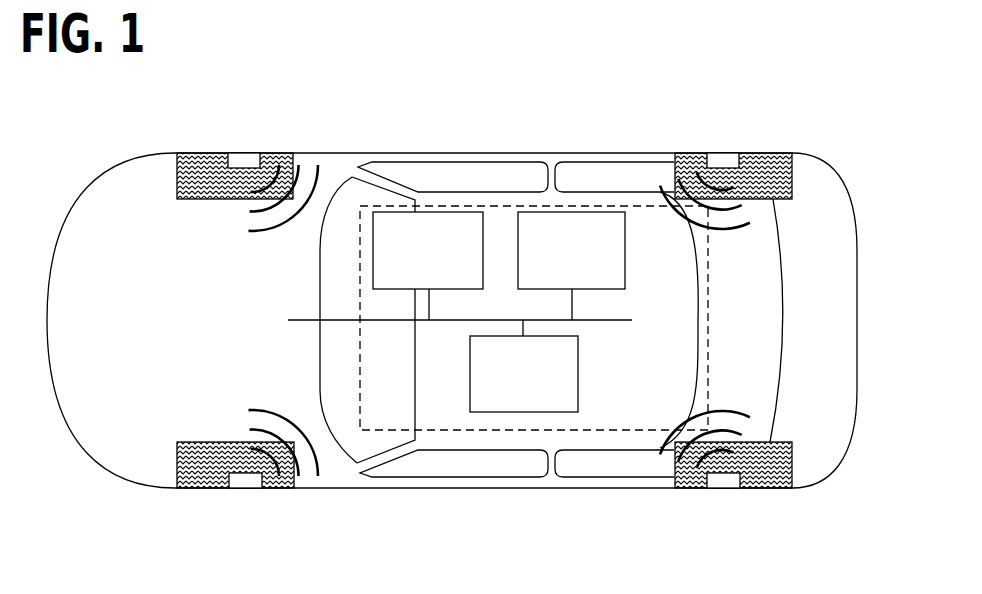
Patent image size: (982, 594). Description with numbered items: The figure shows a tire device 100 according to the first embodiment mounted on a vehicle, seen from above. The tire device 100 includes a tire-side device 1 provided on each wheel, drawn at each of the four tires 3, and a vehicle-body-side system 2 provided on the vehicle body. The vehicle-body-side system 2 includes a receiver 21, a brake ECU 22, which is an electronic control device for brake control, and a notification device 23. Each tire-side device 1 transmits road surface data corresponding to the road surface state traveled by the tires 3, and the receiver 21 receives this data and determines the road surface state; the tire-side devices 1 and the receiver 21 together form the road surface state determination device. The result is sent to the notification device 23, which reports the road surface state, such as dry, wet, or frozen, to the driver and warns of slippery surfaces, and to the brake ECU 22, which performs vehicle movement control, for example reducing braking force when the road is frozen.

The tire device 100 is at (373, 130).
The tire-side device 1 is at (241, 162).
The vehicle-body-side system 2 is at (646, 206).
The tire 3 is at (177, 184).
The receiver 21 is at (523, 412).
The brake ECU 22 is at (583, 212).
The notification device 23 is at (440, 212).